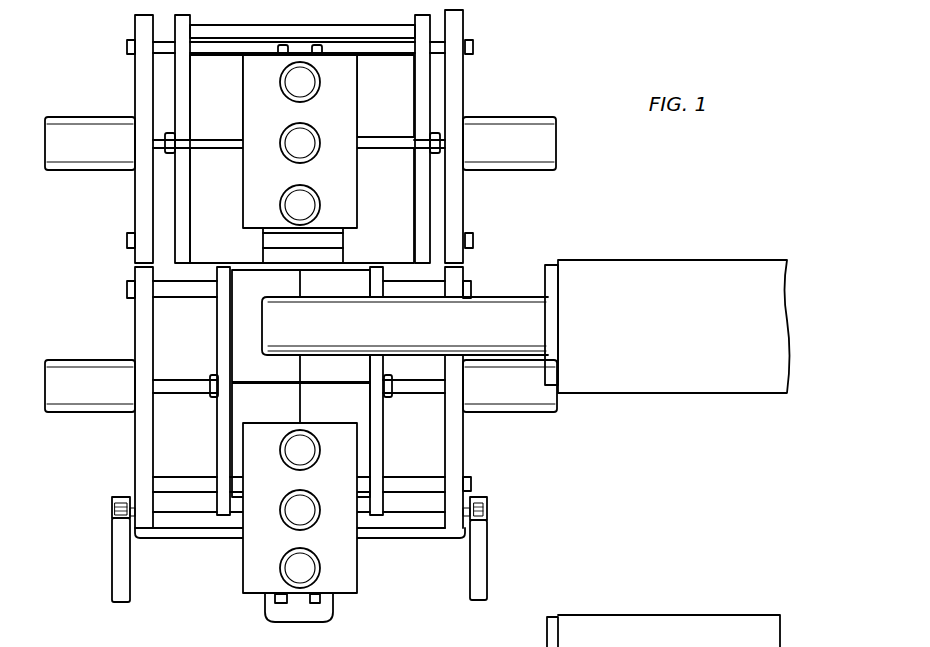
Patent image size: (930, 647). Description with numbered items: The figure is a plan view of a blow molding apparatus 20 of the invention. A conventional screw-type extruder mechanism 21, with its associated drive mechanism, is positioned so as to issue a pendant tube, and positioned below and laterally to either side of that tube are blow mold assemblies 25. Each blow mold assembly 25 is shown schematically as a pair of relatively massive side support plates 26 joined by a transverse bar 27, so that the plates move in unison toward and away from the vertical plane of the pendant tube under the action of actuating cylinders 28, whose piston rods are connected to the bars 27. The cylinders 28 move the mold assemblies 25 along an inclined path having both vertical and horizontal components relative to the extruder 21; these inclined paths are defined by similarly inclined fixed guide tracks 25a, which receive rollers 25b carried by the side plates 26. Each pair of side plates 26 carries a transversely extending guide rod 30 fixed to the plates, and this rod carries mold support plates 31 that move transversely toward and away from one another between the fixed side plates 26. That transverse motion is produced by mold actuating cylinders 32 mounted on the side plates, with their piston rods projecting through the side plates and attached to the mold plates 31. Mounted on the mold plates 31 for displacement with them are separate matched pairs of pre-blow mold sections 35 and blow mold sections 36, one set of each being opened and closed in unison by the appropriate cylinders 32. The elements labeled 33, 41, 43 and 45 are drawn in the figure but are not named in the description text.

The blow molding apparatus 20 is at (502, 79).
The extruder mechanism 21 is at (660, 259).
The blow mold assemblies 25 is at (318, 42).
The fixed guide tracks 25a is at (487, 561).
The rollers 25b is at (482, 517).
The side support plates 26 is at (146, 21).
The transverse bar 27 is at (391, 538).
The actuating cylinders 28 is at (330, 613).
The guide rod 30 is at (272, 43).
The mold support plates 31 is at (187, 81).
The mold actuating cylinders 32 is at (78, 154).
The connecting rail 33 is at (173, 155).
The pre-blow mold sections 35 is at (201, 225).
The blow mold sections 36 is at (205, 115).
The mounting plate 41 is at (320, 121).
The center hole 43 is at (290, 145).
The outer hole 45 is at (292, 91).